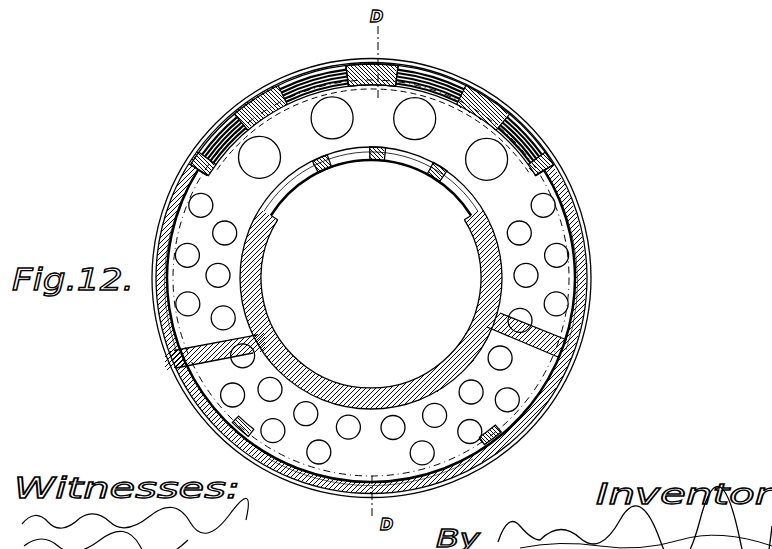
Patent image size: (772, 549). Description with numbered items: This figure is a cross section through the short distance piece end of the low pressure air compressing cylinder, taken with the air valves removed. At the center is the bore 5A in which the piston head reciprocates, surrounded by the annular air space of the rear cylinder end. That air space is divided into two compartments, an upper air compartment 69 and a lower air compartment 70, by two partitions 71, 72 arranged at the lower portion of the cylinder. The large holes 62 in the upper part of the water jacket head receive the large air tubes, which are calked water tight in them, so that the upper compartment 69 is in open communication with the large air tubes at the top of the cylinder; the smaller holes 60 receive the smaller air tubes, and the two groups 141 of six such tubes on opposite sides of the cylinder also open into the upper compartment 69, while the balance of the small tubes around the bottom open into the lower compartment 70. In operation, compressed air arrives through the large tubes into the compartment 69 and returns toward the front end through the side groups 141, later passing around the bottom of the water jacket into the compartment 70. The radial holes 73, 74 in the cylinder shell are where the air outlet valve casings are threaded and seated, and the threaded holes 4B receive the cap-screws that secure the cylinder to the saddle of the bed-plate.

The radial holes 73 is at (328, 72).
The air compartment 69 is at (360, 98).
The bore 5A is at (262, 270).
The radial holes 74 is at (318, 186).
The partition 71 is at (182, 368).
The partition 72 is at (552, 378).
The holes 62 is at (373, 138).
The holes 60 is at (190, 296).
The groups of smaller air tubes 141 is at (182, 219).
The holes 4B is at (548, 447).
The air compartment 70 is at (350, 456).